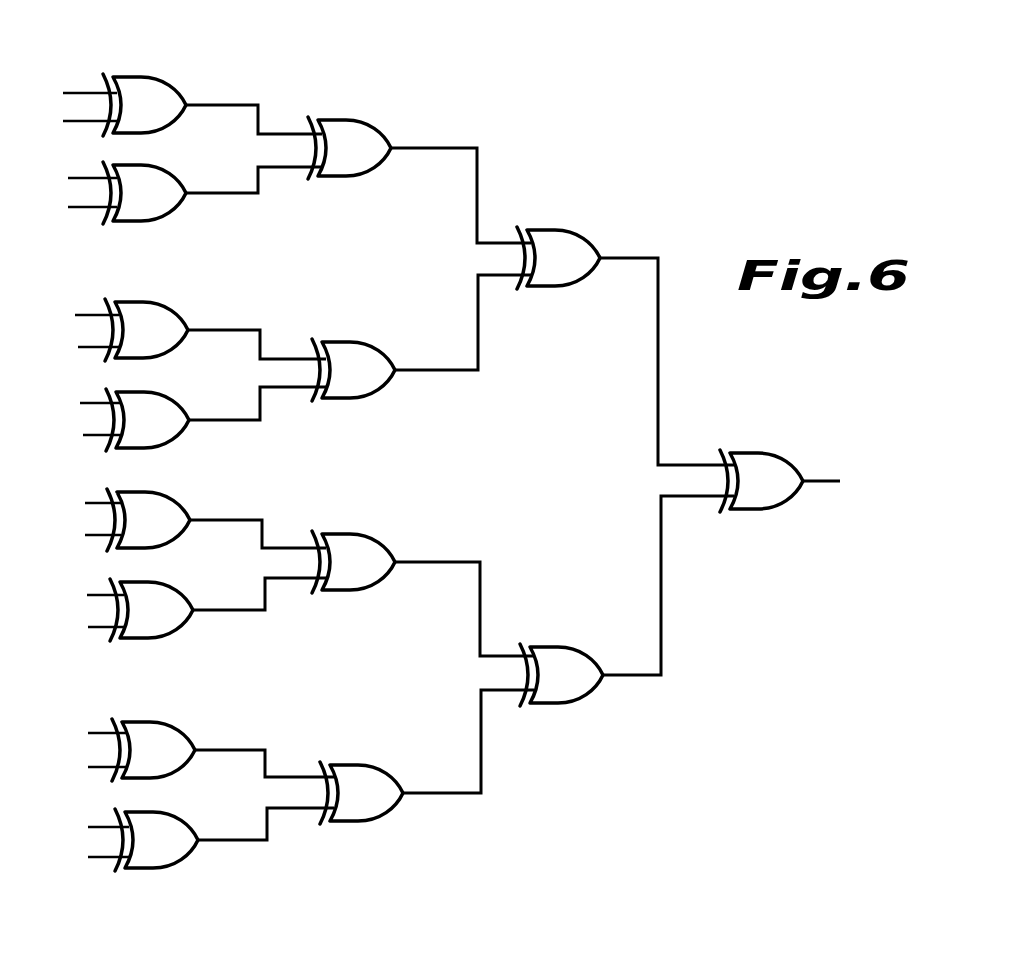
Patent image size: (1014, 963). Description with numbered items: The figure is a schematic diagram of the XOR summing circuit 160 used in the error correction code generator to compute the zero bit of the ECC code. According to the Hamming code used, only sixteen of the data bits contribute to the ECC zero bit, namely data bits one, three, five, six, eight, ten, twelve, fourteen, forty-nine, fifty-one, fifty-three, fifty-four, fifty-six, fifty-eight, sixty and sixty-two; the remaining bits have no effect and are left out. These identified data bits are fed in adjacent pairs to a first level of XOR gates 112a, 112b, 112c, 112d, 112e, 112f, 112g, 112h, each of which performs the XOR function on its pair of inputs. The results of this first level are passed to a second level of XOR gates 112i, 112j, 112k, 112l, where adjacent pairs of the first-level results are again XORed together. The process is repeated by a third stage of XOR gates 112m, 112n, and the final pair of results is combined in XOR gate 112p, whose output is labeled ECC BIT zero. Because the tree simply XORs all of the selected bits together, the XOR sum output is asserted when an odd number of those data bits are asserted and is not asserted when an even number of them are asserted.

The XOR summing circuit 160 is at (557, 105).
The XOR gate 112a is at (168, 85).
The XOR gate 112b is at (172, 214).
The XOR gate 112c is at (176, 311).
The XOR gate 112d is at (180, 433).
The XOR gate 112e is at (176, 497).
The XOR gate 112f is at (172, 634).
The XOR gate 112g is at (180, 728).
The XOR gate 112h is at (178, 862).
The XOR gate 112i is at (372, 125).
The XOR gate 112j is at (375, 341).
The XOR gate 112k is at (362, 535).
The XOR gate 112l is at (387, 822).
The XOR gate 112m is at (565, 228).
The XOR gate 112n is at (578, 704).
The XOR gate 112p is at (768, 511).